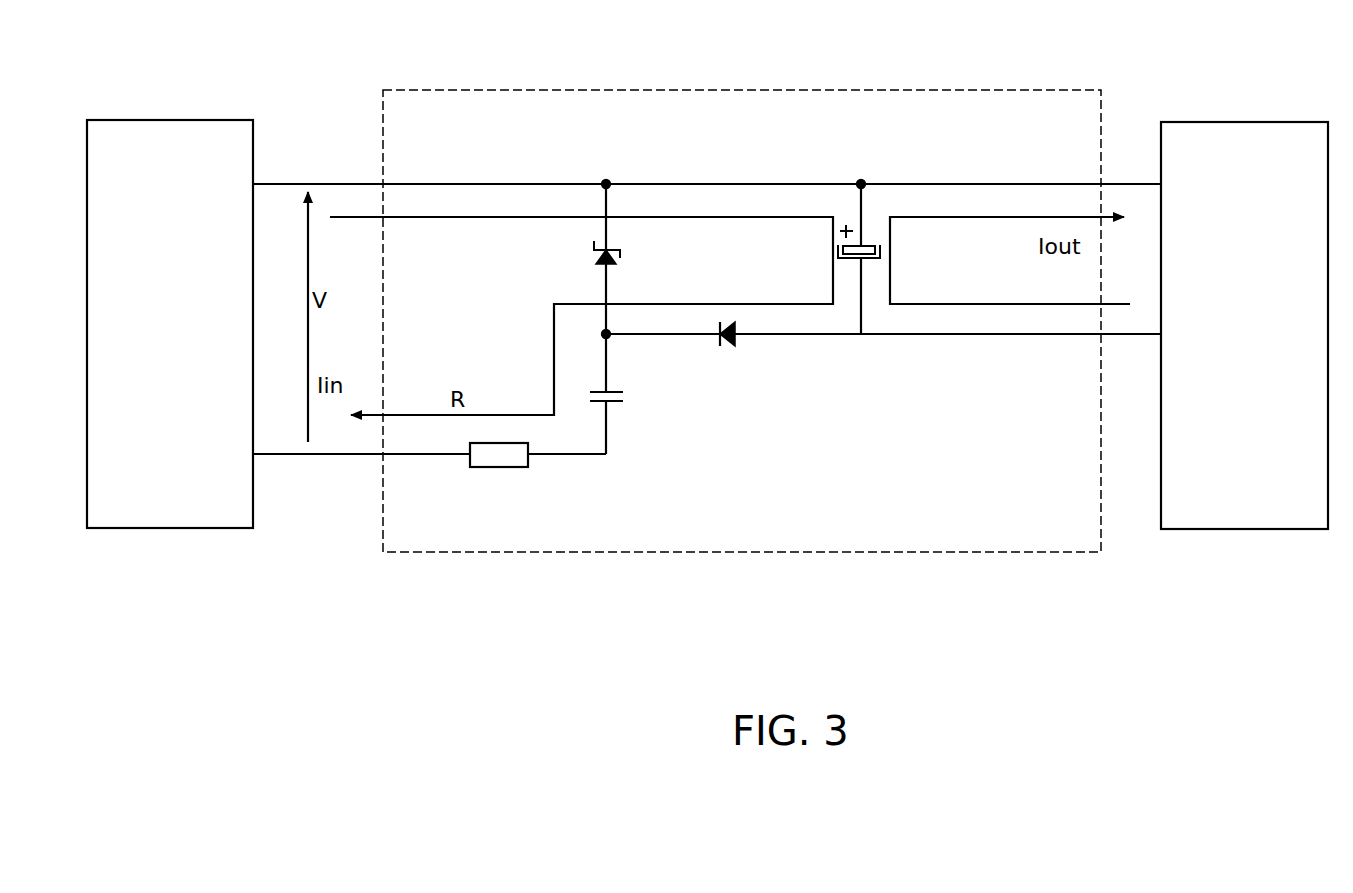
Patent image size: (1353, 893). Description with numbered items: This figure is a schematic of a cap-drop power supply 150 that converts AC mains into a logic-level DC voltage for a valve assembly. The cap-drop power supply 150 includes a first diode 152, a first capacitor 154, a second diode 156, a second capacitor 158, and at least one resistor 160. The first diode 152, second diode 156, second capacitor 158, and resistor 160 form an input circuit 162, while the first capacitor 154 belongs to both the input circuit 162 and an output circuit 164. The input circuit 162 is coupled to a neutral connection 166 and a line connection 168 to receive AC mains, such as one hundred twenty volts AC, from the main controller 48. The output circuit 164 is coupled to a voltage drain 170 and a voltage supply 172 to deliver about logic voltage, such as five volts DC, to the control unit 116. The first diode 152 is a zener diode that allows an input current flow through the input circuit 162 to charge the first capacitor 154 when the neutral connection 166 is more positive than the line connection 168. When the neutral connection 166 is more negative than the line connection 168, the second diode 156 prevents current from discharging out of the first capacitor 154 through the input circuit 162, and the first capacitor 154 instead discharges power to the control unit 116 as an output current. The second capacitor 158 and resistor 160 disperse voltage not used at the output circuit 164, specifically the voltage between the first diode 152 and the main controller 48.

The main controller 48 is at (165, 103).
The control unit 116 is at (1277, 286).
The cap-drop power supply 150 is at (758, 88).
The first diode 152 is at (586, 253).
The first capacitor 154 is at (812, 253).
The second diode 156 is at (803, 394).
The second capacitor 158 is at (627, 421).
The resistor 160 is at (463, 471).
The input circuit 162 is at (511, 176).
The output circuit 164 is at (937, 157).
The neutral connection 166 is at (320, 183).
The line connection 168 is at (333, 457).
The voltage drain 170 is at (1126, 183).
The voltage supply 172 is at (1135, 337).